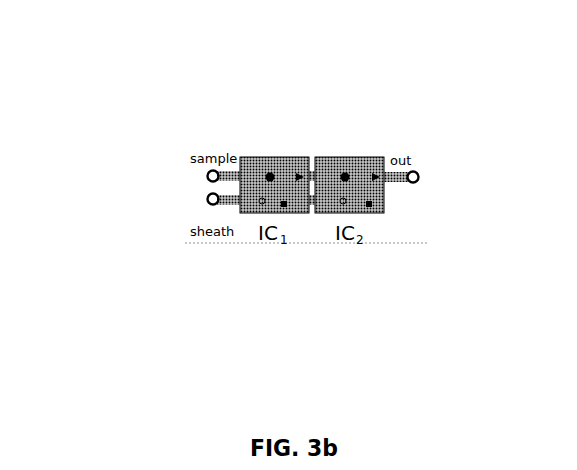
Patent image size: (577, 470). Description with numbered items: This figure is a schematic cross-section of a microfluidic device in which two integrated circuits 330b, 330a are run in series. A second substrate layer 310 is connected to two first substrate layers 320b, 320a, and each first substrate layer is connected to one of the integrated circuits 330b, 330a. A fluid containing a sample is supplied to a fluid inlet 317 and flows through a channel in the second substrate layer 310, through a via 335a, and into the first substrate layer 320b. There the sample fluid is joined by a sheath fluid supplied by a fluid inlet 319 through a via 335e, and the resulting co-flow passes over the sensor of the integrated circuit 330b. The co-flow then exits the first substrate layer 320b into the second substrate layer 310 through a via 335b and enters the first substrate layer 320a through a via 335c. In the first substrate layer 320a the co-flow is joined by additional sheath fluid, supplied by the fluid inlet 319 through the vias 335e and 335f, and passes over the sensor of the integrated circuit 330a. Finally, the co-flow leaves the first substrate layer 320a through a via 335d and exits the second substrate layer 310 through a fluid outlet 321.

The second substrate layer 310 is at (421, 138).
The fluid inlet 317 is at (205, 172).
The fluid inlet 319 is at (206, 196).
The first substrate layer 320a is at (339, 155).
The first substrate layer 320b is at (250, 156).
The fluid outlet 321 is at (423, 177).
The integrated circuit 330a is at (358, 168).
The integrated circuit 330b is at (281, 168).
The via 335a is at (268, 213).
The via 335b is at (307, 213).
The via 335c is at (345, 213).
The via 335d is at (384, 192).
The via 335e is at (288, 217).
The via 335f is at (370, 218).